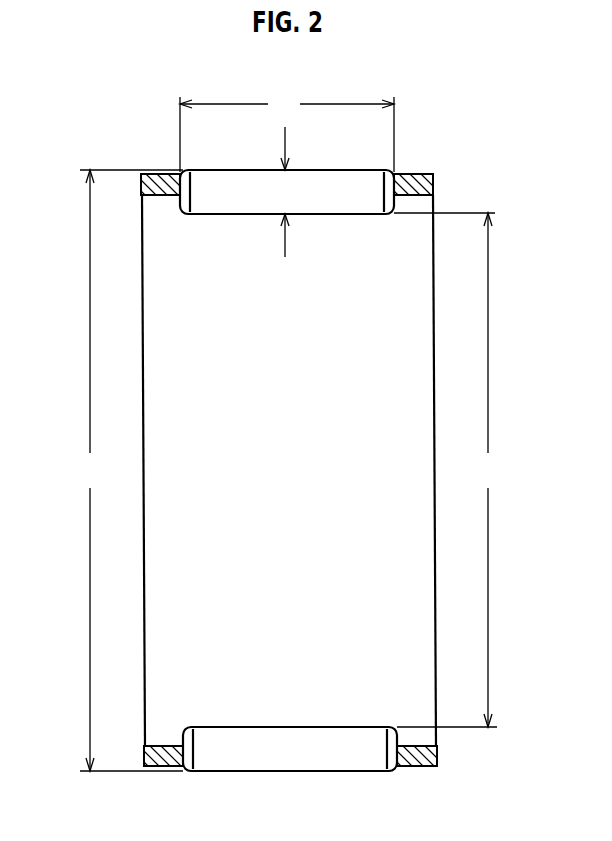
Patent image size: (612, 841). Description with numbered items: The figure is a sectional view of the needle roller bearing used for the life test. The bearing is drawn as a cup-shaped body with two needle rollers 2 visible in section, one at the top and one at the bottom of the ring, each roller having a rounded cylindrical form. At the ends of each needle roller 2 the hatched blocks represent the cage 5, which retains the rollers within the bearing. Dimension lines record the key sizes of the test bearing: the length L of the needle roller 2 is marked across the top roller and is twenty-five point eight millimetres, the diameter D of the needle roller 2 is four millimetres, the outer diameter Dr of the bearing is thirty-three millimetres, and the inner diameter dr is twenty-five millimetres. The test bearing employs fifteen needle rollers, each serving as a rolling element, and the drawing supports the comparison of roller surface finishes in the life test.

The needle roller 2 is at (298, 742).
The cage 5 is at (416, 176).
The length of the needle roller L is at (287, 132).
The diameter of the needle roller D is at (293, 193).
The outer diameter Dr is at (129, 470).
The inner diameter dr is at (448, 470).